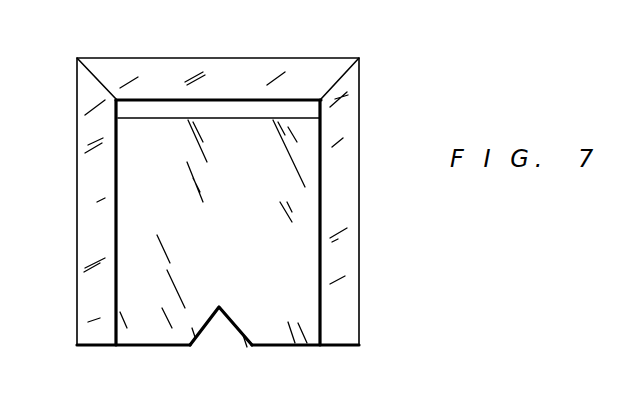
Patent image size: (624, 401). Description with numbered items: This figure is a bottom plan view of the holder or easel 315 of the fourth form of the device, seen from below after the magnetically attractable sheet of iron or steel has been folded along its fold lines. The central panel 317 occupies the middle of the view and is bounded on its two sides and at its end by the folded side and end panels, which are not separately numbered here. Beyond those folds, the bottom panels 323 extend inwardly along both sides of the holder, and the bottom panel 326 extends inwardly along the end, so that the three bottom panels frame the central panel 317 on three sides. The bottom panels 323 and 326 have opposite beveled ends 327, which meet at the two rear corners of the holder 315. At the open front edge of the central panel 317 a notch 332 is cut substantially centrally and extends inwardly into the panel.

The holder or easel 315 is at (362, 113).
The central panel 317 is at (234, 242).
The bottom panels 323 is at (77, 224).
The bottom panel 326 is at (170, 75).
The beveled ends 327 is at (95, 41).
The notch 332 is at (245, 345).